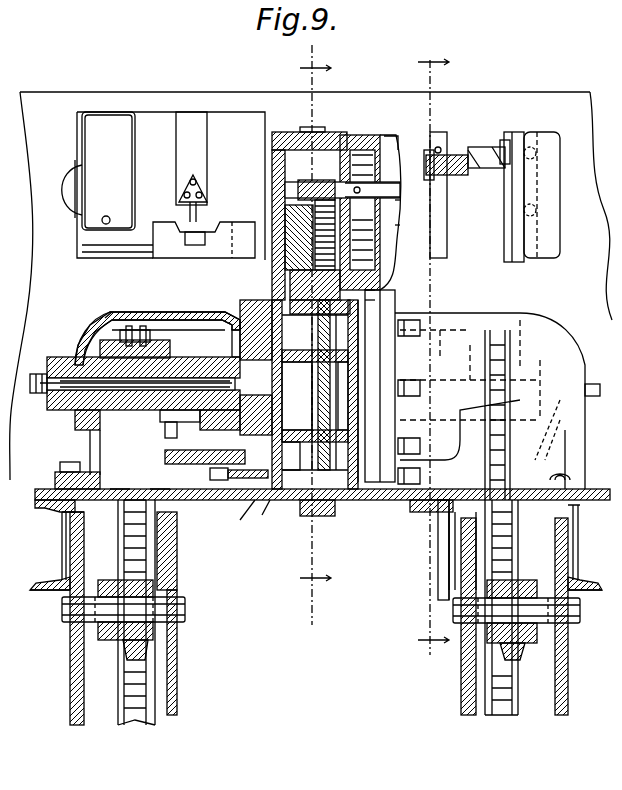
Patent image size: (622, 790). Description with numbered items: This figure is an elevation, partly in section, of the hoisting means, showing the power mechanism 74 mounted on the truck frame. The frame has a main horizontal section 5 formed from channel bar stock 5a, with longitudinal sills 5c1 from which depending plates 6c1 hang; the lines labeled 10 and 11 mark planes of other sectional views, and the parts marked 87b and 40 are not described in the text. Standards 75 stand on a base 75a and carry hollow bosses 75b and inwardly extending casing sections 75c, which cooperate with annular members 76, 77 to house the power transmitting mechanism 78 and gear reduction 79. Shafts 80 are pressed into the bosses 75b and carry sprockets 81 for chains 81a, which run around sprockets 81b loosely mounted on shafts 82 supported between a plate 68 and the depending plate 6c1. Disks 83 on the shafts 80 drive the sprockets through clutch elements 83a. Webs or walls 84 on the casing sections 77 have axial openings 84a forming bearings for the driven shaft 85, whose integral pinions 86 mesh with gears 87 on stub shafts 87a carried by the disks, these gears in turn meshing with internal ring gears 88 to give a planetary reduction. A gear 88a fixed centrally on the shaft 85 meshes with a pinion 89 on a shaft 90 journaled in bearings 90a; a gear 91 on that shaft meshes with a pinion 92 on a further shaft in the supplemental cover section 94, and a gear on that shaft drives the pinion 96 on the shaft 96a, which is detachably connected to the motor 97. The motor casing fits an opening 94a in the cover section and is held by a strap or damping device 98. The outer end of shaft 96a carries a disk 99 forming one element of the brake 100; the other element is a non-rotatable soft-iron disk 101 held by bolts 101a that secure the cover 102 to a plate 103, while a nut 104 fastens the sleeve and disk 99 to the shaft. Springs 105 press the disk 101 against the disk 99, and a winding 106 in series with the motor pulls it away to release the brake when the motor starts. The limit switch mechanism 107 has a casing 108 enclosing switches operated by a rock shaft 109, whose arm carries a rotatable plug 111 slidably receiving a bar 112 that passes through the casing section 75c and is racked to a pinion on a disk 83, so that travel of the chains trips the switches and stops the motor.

The section line 10- 10 is at (311, 330).
The section line 11- 11 is at (433, 353).
The motor 97 is at (152, 120).
The strap or damping device 98 is at (205, 125).
The plate 103 is at (270, 195).
The gear 91 is at (262, 238).
The opening 94a is at (272, 140).
The shaft 96a is at (285, 162).
The pinion 92 is at (270, 205).
The supplemental cover section 94 is at (345, 130).
The pinion 96 is at (318, 180).
The shaft 90 is at (350, 268).
The disk 99 is at (432, 160).
The nut 104 is at (452, 172).
The rotatable plug 111 is at (448, 180).
The disk 101 is at (385, 140).
The bolts 101a is at (478, 150).
The rock shaft 109 is at (498, 145).
The limit switch mechanism 107 is at (560, 190).
The casing 108 is at (558, 246).
The cover 102 is at (400, 205).
The brake 100 is at (400, 230).
The bar 112 is at (380, 268).
The springs 105 is at (372, 290).
The winding 106 is at (372, 300).
The power mechanism 74 is at (150, 312).
The casing sections 75c is at (112, 314).
The disks 83 is at (210, 312).
The hollow bosses 75b is at (48, 356).
The gear reduction 79 is at (218, 358).
The shafts 80 is at (50, 388).
The sprockets 81 is at (128, 350).
The stub shafts 87a is at (240, 330).
The clutch elements 83a is at (160, 430).
The gears 87 is at (228, 430).
The sleeve flange 87b is at (242, 452).
The base 75a is at (280, 500).
The internal ring gears 88 is at (256, 515).
The annular members 76 is at (232, 505).
The annular members 77 is at (312, 508).
The pinions 86 is at (296, 395).
The power transmitting mechanism 78 is at (330, 385).
The driven shaft 85 is at (352, 372).
The gear 88a is at (348, 430).
The axial openings 84a is at (310, 420).
The webs or walls 84 is at (330, 500).
The bearings 90a is at (382, 330).
The pinion 89 is at (352, 335).
The standards 75 is at (50, 428).
The rollers 40 is at (572, 468).
The plate 68 is at (70, 692).
The plates 6c1 is at (180, 706).
The channel bar stock 5a is at (66, 560).
The main horizontal section 5 is at (52, 592).
The shafts 82 is at (186, 608).
The sprockets 81b is at (140, 650).
The chains 81a is at (140, 722).
The longitudinal sills 5c1 is at (462, 548).